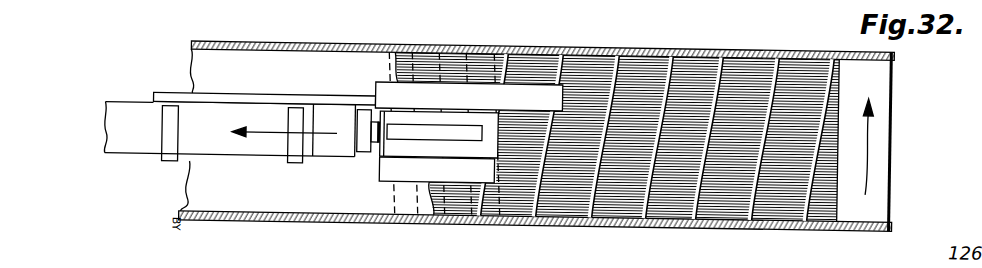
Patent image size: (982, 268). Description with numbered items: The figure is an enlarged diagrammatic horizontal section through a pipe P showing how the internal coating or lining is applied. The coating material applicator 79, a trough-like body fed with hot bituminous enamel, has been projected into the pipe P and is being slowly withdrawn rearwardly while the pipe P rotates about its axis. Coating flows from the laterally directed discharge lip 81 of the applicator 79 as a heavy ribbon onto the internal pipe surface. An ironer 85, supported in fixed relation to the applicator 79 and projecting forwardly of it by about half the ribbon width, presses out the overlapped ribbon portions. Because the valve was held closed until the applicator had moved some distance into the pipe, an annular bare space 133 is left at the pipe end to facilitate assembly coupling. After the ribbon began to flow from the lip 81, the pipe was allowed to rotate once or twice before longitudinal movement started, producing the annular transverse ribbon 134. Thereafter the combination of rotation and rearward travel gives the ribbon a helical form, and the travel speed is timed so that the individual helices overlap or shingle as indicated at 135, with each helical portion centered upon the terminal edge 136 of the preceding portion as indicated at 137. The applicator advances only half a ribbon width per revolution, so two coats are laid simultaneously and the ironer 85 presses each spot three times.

The pipe P is at (690, 54).
The coating material applicator 79 is at (395, 150).
The discharge lip 81 is at (398, 175).
The ironer 85 is at (530, 91).
The bare space 133 is at (882, 99).
The annular transverse ribbon 134 is at (736, 99).
The overlapping helices 135 is at (656, 204).
The terminal edge 136 is at (423, 206).
The centered helical portion 137 is at (438, 97).